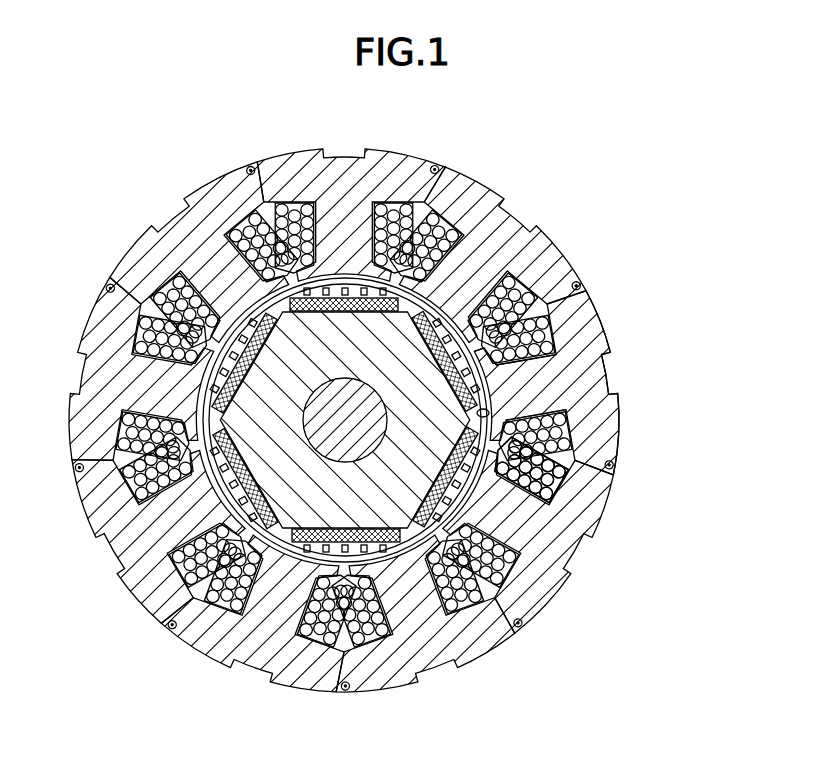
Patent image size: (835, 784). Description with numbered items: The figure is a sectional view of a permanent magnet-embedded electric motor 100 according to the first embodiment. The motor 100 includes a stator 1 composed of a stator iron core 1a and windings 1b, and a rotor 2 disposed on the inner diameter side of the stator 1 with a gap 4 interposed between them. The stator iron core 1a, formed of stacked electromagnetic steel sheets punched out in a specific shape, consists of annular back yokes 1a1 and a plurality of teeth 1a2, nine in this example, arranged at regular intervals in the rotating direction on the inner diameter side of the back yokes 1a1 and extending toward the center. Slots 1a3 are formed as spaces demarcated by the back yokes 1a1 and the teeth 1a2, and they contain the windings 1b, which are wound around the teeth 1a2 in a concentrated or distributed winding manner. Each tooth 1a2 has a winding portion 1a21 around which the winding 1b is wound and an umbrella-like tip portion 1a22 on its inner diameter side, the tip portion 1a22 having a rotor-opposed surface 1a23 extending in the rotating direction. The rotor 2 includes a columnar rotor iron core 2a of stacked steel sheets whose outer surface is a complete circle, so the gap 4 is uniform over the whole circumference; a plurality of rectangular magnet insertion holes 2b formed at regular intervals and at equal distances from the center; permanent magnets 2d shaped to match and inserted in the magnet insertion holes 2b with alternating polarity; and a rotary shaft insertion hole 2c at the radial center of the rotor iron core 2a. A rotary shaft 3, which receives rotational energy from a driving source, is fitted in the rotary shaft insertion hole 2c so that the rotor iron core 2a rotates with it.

The permanent magnet-embedded electric motor 100 is at (460, 116).
The stator 1 is at (762, 483).
The stator iron core 1a is at (727, 443).
The back yoke 1a1 is at (577, 320).
The tooth 1a2 is at (674, 322).
The winding portion 1a21 is at (537, 372).
The tip portion 1a22 is at (487, 393).
The rotor-opposed surface 1a23 is at (490, 407).
The slot 1a3 is at (557, 457).
The winding 1b is at (558, 473).
The rotor 2 is at (42, 525).
The rotor iron core 2a is at (252, 425).
The magnet insertion hole 2b is at (305, 448).
The rotary shaft insertion hole 2c is at (245, 495).
The permanent magnet 2d is at (272, 528).
The rotary shaft 3 is at (363, 433).
The gap 4 is at (397, 552).